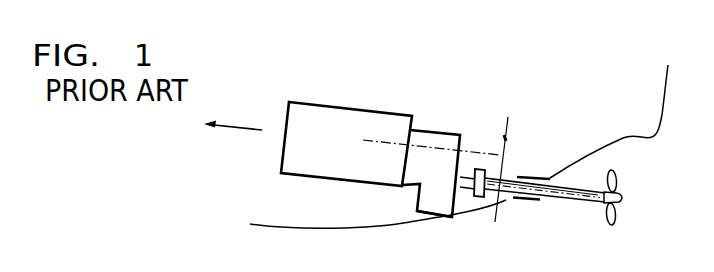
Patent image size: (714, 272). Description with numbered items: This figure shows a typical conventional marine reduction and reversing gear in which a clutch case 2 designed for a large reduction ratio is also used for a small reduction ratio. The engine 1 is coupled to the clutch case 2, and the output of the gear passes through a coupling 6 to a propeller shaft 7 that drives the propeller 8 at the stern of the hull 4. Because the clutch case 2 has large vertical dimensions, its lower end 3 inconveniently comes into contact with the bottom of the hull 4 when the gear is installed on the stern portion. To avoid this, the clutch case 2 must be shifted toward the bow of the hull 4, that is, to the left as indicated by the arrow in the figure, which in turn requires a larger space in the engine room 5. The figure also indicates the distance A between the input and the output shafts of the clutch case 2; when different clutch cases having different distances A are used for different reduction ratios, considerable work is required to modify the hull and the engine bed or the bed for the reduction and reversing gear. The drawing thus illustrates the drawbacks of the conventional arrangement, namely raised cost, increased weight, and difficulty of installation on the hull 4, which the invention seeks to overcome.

The engine 1 is at (357, 110).
The clutch case 2 is at (430, 130).
The lower end 3 is at (450, 218).
The hull 4 is at (660, 120).
The engine room 5 is at (575, 116).
The coupling 6 is at (478, 197).
The propeller shaft 7 is at (565, 197).
The propeller 8 is at (617, 217).
The distance between the input and the output shafts A is at (502, 167).